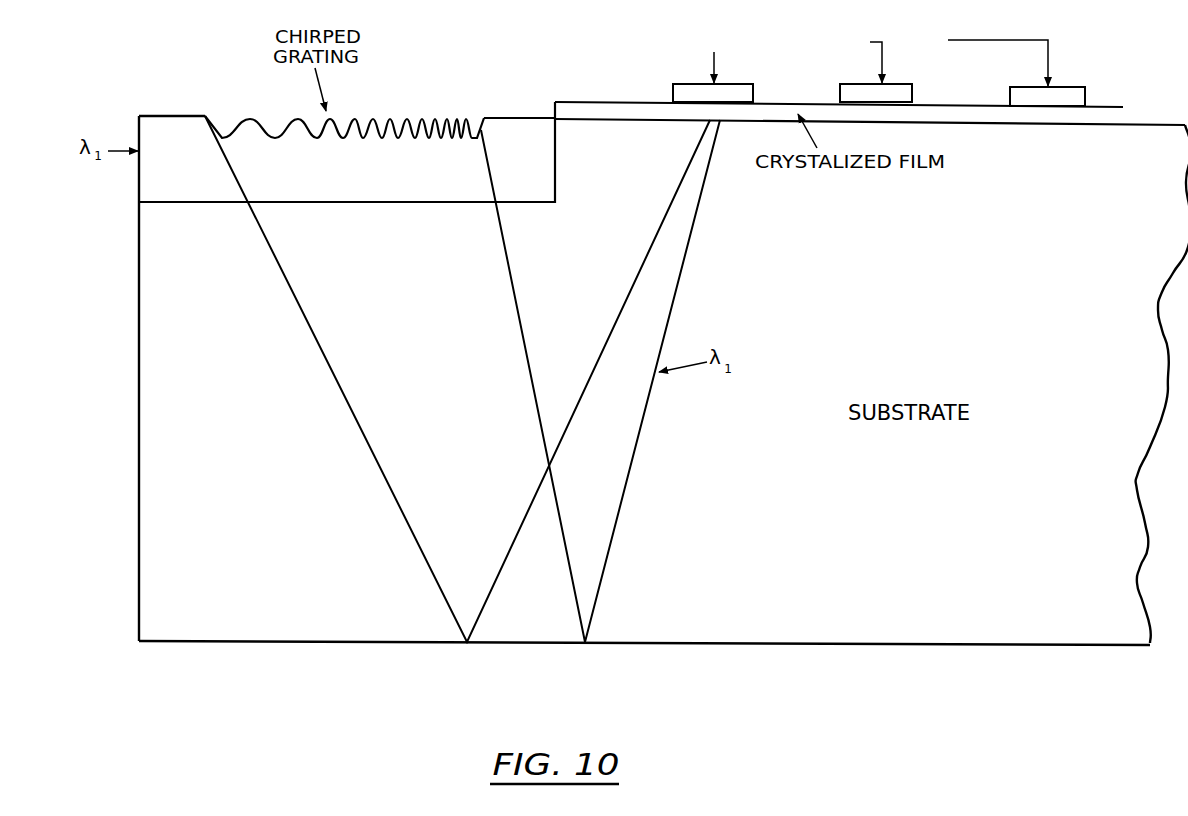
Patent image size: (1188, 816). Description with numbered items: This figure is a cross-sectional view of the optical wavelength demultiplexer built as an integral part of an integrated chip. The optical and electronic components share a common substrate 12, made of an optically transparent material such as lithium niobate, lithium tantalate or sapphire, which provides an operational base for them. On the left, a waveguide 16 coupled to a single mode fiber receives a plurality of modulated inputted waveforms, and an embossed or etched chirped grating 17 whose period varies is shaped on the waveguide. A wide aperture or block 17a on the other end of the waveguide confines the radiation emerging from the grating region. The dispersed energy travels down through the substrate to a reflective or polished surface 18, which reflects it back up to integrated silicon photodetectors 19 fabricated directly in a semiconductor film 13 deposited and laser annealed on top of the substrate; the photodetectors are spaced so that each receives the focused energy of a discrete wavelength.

The substrate 12 is at (725, 443).
The semiconductor film 13 is at (978, 115).
The waveguide 16 is at (167, 133).
The chirped grating 17 is at (428, 120).
The block 17a is at (553, 140).
The reflective surface 18 is at (523, 645).
The integrated silicon photodetectors 19 is at (742, 84).